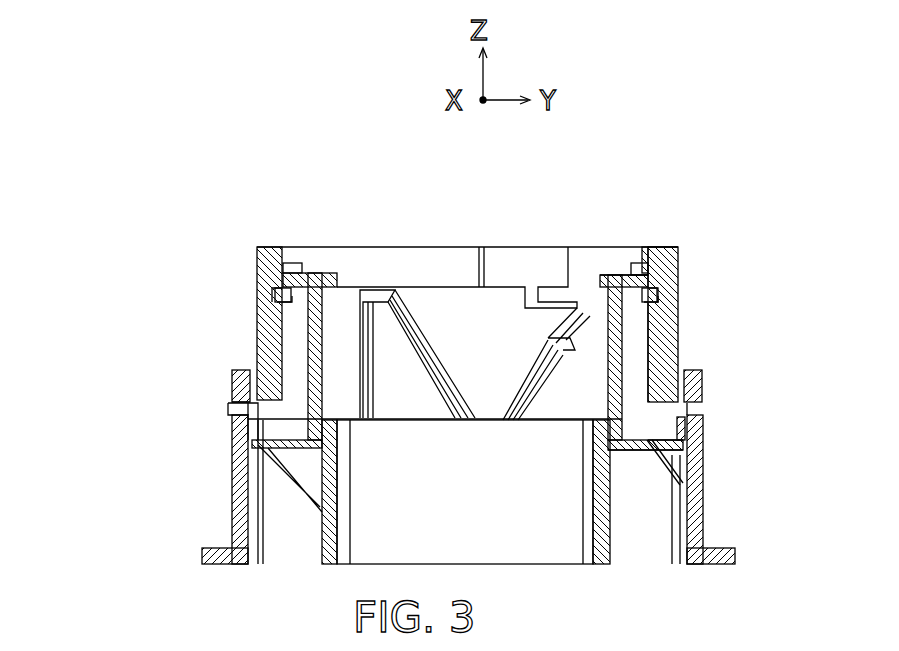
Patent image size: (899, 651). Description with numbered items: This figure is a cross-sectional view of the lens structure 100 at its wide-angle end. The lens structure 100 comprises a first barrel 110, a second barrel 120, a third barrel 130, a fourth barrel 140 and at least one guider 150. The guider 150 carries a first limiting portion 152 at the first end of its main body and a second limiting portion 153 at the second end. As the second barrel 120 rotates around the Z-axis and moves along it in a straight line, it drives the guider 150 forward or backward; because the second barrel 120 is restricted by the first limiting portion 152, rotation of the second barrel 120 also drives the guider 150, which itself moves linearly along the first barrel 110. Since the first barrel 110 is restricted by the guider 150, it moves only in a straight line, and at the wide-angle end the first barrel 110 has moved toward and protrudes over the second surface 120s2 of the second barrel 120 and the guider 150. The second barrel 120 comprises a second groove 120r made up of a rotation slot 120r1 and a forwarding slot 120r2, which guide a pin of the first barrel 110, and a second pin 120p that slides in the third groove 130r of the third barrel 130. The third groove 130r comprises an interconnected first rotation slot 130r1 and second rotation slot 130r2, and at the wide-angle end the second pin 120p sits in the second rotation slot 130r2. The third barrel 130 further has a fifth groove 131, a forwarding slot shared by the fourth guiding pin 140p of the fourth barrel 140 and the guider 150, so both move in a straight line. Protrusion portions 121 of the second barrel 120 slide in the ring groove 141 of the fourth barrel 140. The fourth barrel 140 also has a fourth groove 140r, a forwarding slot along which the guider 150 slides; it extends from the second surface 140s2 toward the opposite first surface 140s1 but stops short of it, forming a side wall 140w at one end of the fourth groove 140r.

The lens structure 100 is at (222, 170).
The first barrel 110 is at (327, 532).
The second barrel 120 is at (265, 448).
The second pin 120p is at (227, 408).
The second groove 120r is at (317, 270).
The rotation slot 120r1 is at (418, 328).
The forwarding slot 120r2 is at (368, 328).
The second surface 120s2 is at (648, 442).
The protrusion portion 121 is at (678, 273).
The third barrel 130 is at (202, 550).
The third groove 130r is at (82, 362).
The first rotation slot 130r1 is at (300, 468).
The second rotation slot 130r2 is at (232, 393).
The fifth groove 131 is at (267, 549).
The fourth barrel 140 is at (258, 258).
The fourth guiding pin 140p is at (248, 370).
The fourth groove 140r is at (678, 250).
The first surface 140s1 is at (663, 247).
The second surface 140s2 is at (695, 440).
The side wall 140w is at (622, 273).
The ring groove 141 is at (257, 280).
The guider 150 is at (317, 342).
The first limiting portion 152 is at (613, 273).
The second limiting portion 153 is at (685, 440).